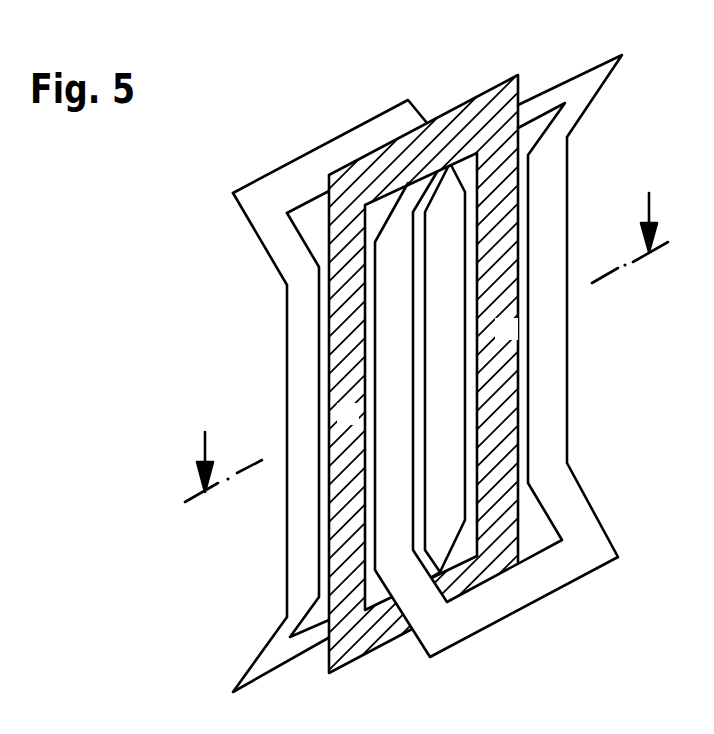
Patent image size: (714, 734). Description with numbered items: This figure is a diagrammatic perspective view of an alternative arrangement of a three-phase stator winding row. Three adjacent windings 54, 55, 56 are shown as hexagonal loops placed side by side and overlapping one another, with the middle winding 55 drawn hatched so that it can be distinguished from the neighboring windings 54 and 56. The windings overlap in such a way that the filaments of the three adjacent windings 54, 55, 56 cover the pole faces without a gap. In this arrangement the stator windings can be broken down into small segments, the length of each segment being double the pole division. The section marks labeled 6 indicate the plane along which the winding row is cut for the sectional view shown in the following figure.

The winding 54 is at (386, 110).
The winding 55 is at (492, 88).
The winding 56 is at (593, 69).
The section line VI-VI 6 is at (426, 344).